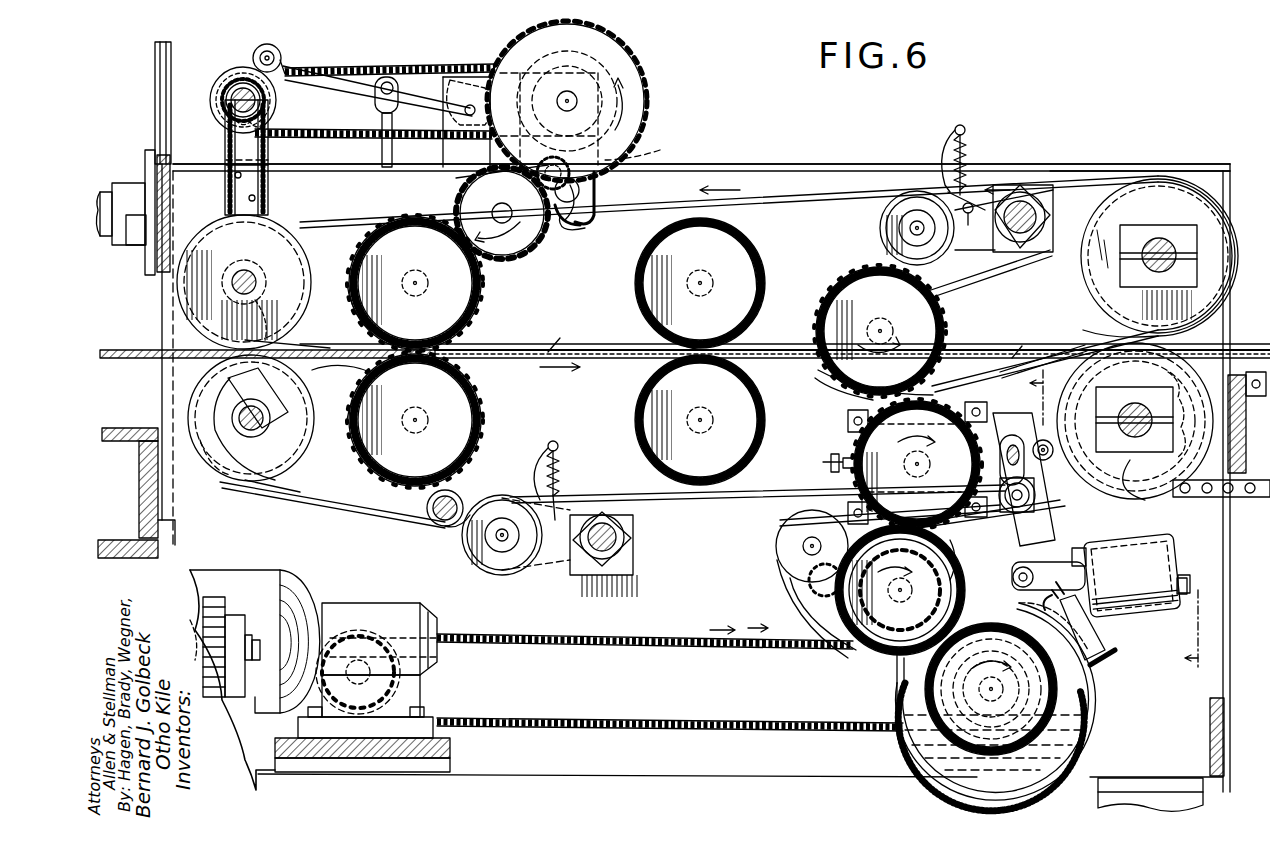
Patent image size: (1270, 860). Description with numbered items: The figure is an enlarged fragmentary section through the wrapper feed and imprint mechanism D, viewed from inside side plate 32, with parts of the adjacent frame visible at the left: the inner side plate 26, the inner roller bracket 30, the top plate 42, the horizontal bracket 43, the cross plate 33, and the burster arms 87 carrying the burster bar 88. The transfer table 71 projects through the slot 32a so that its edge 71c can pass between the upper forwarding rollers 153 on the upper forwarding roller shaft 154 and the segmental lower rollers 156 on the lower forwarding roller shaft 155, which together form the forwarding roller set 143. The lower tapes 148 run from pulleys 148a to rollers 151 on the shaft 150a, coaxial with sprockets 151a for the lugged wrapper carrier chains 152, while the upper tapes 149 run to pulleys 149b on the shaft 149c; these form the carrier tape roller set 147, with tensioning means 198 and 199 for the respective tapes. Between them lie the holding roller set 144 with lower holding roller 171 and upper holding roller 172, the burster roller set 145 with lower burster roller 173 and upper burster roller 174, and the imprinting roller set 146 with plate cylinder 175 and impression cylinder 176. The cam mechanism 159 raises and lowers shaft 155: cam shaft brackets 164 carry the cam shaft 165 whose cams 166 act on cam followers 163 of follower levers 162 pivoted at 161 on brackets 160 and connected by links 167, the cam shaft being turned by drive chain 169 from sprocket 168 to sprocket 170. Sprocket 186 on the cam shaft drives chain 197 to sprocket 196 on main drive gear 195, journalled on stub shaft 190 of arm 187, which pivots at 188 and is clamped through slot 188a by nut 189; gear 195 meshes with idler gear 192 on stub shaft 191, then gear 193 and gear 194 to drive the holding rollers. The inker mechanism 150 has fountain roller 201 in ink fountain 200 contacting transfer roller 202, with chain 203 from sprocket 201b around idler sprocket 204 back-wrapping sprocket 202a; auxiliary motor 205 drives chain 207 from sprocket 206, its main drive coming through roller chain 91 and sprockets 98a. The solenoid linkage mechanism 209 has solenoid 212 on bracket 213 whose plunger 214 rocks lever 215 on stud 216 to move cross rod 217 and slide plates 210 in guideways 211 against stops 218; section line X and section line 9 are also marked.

The inner roller bracket 30 is at (165, 66).
The cross plate 33 is at (160, 160).
The burster bar 88 is at (105, 200).
The burster arms 87 is at (128, 245).
The slot in side plate 32a is at (173, 345).
The transfer table 71 is at (123, 358).
The top plate 42 is at (125, 428).
The inner side plate 26 is at (140, 478).
The horizontal bracket 43 is at (118, 540).
The sprocket on cam shaft 186 is at (236, 78).
The cam shaft 165 is at (262, 104).
The cams 166 is at (270, 96).
The cam shaft brackets 164 is at (252, 178).
The sprocket 168 is at (236, 132).
The drive chain 169 is at (226, 155).
The cam follower 163 is at (258, 56).
The follower levers 162 is at (306, 48).
The cam mechanism 159 is at (362, 56).
The drive chain 197 is at (410, 66).
The links 167 is at (380, 150).
The pivots 161 is at (462, 106).
The follower lever brackets 160 is at (452, 150).
The main drive gear 195 is at (620, 56).
The sprocket 196 is at (537, 68).
The stub shaft 190 is at (572, 98).
The adjusting clamp nut 189 is at (556, 172).
The stub shaft 191 is at (500, 202).
The intermediate idler gear 192 is at (460, 186).
The slot 188a is at (636, 164).
The drive gear carrying arm 187 is at (590, 190).
The pivot 188 is at (584, 210).
The wrapper feed and imprint mechanism D is at (841, 159).
The side plate 32 is at (1050, 166).
The upper tapes 149 is at (322, 210).
The pulleys 149b is at (1126, 198).
The shaft 149c is at (1162, 235).
The carrier tape roller set 147 is at (1094, 317).
The tensioning means 199 is at (871, 218).
The sprocket 170 is at (262, 272).
The upper forwarding roller shaft 154 is at (244, 268).
The edge of transfer table 71c is at (267, 320).
The upper forwarding rollers 153 is at (290, 322).
The lower forwarding roller shaft 155 is at (270, 440).
The roller segments 156 is at (260, 476).
The pulleys 148a is at (215, 470).
The forwarding roller set 143 is at (250, 498).
The lower tapes 148 is at (318, 500).
The gear 194 is at (352, 372).
The upper holding roller 172 is at (484, 284).
The gear 193 is at (462, 322).
The lower holding roller 171 is at (464, 385).
The holding roller set 144 is at (491, 412).
The upper burster roller 174 is at (640, 270).
The burster roller set 145 is at (775, 268).
The lower burster roller 173 is at (640, 408).
The section line X is at (783, 337).
The impression cylinder 176 is at (946, 284).
The imprinting roller set 146 is at (949, 313).
The plate cylinder 175 is at (850, 436).
The guideways 211 is at (840, 500).
The tensioning means 198 is at (458, 569).
The cross rod 217 is at (1008, 450).
The slide plate stop 218 is at (1042, 460).
The stud 216 is at (1036, 494).
The slide plates 210 is at (1013, 384).
The section line 9- 9 is at (1114, 528).
The shaft 150a is at (1128, 410).
The rollers 151 is at (1175, 460).
The sprockets 151a is at (1135, 504).
The lugged wrapper carrier chains 152 is at (1242, 500).
The bracket 213 is at (1070, 550).
The plunger 214 is at (1084, 566).
The actuating solenoid 212 is at (1148, 610).
The solenoid linkage mechanism 209 is at (1196, 590).
The lever 215 is at (952, 526).
The transfer roller 202 is at (950, 545).
The sprocket 202a is at (950, 560).
The idler sprocket 204 is at (776, 552).
The drive chain 203 is at (805, 590).
The fountain roller 201 is at (910, 660).
The ink fountain 200 is at (1085, 706).
The imprinting inker mechanism 150 is at (882, 701).
The sprocket 201b is at (985, 655).
The gear head electric motor 205 is at (304, 600).
The multiple sprockets 98a is at (232, 640).
The multiple roller chain 91 is at (212, 620).
The sprocket 206 is at (420, 692).
The drive chain 207 is at (626, 640).